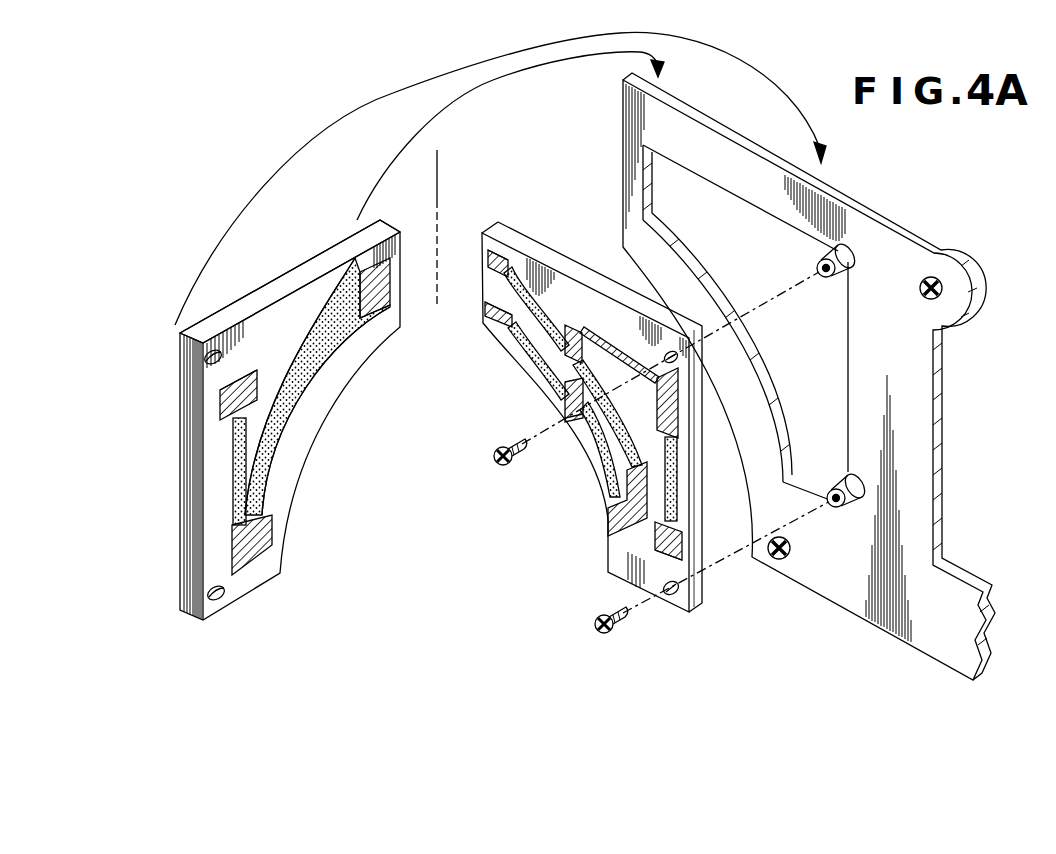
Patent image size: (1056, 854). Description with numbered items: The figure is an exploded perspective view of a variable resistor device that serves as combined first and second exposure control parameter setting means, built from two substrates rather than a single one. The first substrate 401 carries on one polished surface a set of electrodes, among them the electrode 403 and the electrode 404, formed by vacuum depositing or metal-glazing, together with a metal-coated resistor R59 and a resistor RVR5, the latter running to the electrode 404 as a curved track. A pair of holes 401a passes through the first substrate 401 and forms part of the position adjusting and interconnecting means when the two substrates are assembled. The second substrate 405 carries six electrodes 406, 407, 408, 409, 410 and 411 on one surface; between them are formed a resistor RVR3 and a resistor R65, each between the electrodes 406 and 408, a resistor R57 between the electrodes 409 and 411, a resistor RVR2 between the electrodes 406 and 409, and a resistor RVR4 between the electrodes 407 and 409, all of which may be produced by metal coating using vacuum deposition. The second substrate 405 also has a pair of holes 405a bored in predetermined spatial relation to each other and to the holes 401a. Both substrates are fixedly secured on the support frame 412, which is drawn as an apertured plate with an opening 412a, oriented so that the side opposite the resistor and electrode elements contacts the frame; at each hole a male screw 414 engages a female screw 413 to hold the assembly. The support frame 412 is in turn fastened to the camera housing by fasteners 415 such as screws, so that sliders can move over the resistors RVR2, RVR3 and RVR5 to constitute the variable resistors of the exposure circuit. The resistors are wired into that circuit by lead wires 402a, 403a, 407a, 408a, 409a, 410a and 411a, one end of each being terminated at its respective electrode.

The first substrate 401 is at (283, 537).
The holes of the first substrate 401a is at (208, 350).
The lead wire 402a is at (258, 555).
The electrode 403 is at (221, 420).
The lead wire 403a is at (228, 400).
The electrode 404 is at (391, 279).
The second substrate 405 is at (273, 289).
The holes of the second substrate 405a is at (679, 359).
The electrode 406 is at (609, 540).
The electrode 407 is at (690, 558).
The lead wire 407a is at (678, 541).
The electrode 408 is at (560, 400).
The lead wire 408a is at (600, 448).
The electrode 409 is at (574, 328).
The lead wire 409a is at (685, 392).
The electrode 410 is at (486, 308).
The lead wire 410a is at (503, 318).
The electrode 411 is at (489, 251).
The lead wire 411a is at (512, 236).
The support frame 412 is at (931, 535).
The sector opening 412a is at (757, 203).
The female screw 413 is at (835, 265).
The male screw 414 is at (503, 465).
The fastener 415 is at (944, 289).
The resistor R57 is at (531, 282).
The resistor R59 is at (233, 480).
The resistor R65 is at (541, 351).
The variable resistor element RVR2 is at (605, 378).
The variable resistor element RVR3 is at (598, 455).
The variable resistor element RVR4 is at (675, 467).
The variable resistor element RVR5 is at (286, 408).